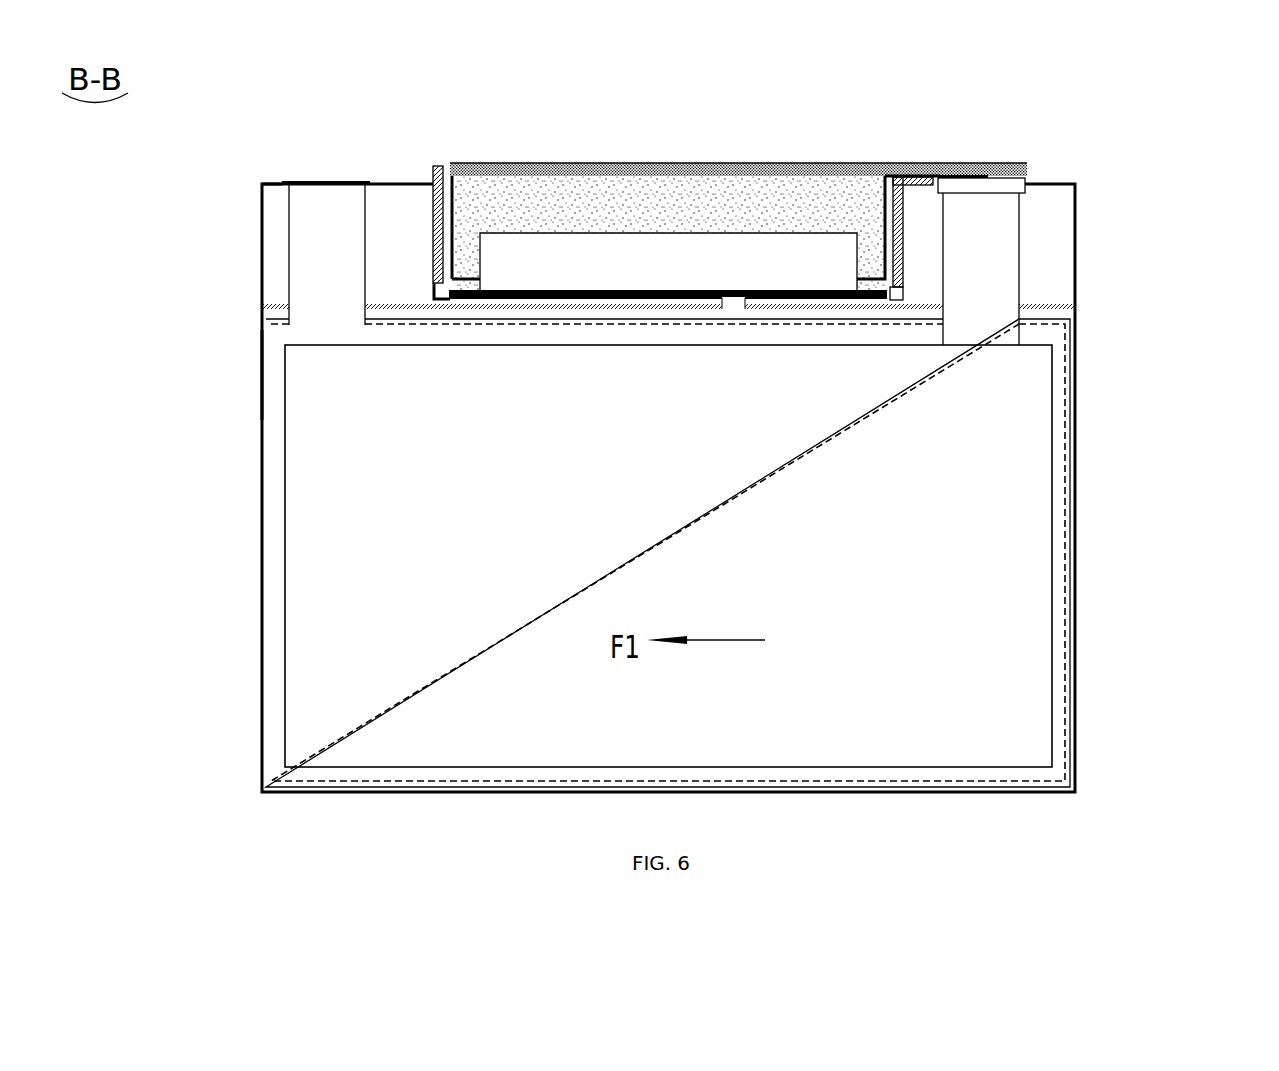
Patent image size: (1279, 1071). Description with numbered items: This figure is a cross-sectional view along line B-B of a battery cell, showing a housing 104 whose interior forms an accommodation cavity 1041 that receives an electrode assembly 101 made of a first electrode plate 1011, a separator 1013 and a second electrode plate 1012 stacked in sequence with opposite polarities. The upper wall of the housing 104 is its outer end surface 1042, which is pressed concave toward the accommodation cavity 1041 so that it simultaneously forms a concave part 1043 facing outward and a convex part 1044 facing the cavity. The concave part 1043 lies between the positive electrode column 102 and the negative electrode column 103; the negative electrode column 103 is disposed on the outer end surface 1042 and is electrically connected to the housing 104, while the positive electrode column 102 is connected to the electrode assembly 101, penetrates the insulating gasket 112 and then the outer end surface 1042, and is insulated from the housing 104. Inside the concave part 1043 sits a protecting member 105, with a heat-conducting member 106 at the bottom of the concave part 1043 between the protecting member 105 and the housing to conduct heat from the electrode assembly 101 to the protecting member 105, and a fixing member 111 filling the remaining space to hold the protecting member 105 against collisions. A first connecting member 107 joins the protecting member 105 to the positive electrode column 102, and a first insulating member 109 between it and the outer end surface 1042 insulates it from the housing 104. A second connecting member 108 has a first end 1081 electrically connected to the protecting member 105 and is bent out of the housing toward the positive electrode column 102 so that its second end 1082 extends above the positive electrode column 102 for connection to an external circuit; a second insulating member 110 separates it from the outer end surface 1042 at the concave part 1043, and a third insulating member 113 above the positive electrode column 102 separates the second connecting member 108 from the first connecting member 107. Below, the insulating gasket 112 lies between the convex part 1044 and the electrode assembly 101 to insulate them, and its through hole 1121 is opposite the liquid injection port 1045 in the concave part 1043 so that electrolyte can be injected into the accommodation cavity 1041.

The electrode assembly 101 is at (754, 553).
The first electrode plate 1011 is at (1037, 612).
The second electrode plate 1012 is at (1068, 553).
The separator 1013 is at (1070, 485).
The positive electrode column 102 is at (988, 188).
The negative electrode column 103 is at (333, 181).
The housing 104 is at (262, 262).
The accommodation cavity 1041 is at (258, 367).
The outer end surface 1042 is at (277, 182).
The concave part 1043 is at (742, 182).
The convex part 1044 is at (440, 303).
The liquid injection port 1045 is at (730, 301).
The protecting member 105 is at (620, 260).
The heat-conducting member 106 is at (792, 302).
The first connecting member 107 is at (882, 218).
The second connecting member 108 is at (882, 162).
The first end of second connecting member 1081 is at (480, 280).
The second end of second connecting member 1082 is at (1028, 163).
The first insulating member 109 is at (898, 250).
The second insulating member 110 is at (438, 165).
The fixing member 111 is at (643, 190).
The insulating gasket 112 is at (577, 307).
The through hole 1121 is at (743, 308).
The third insulating member 113 is at (695, 168).